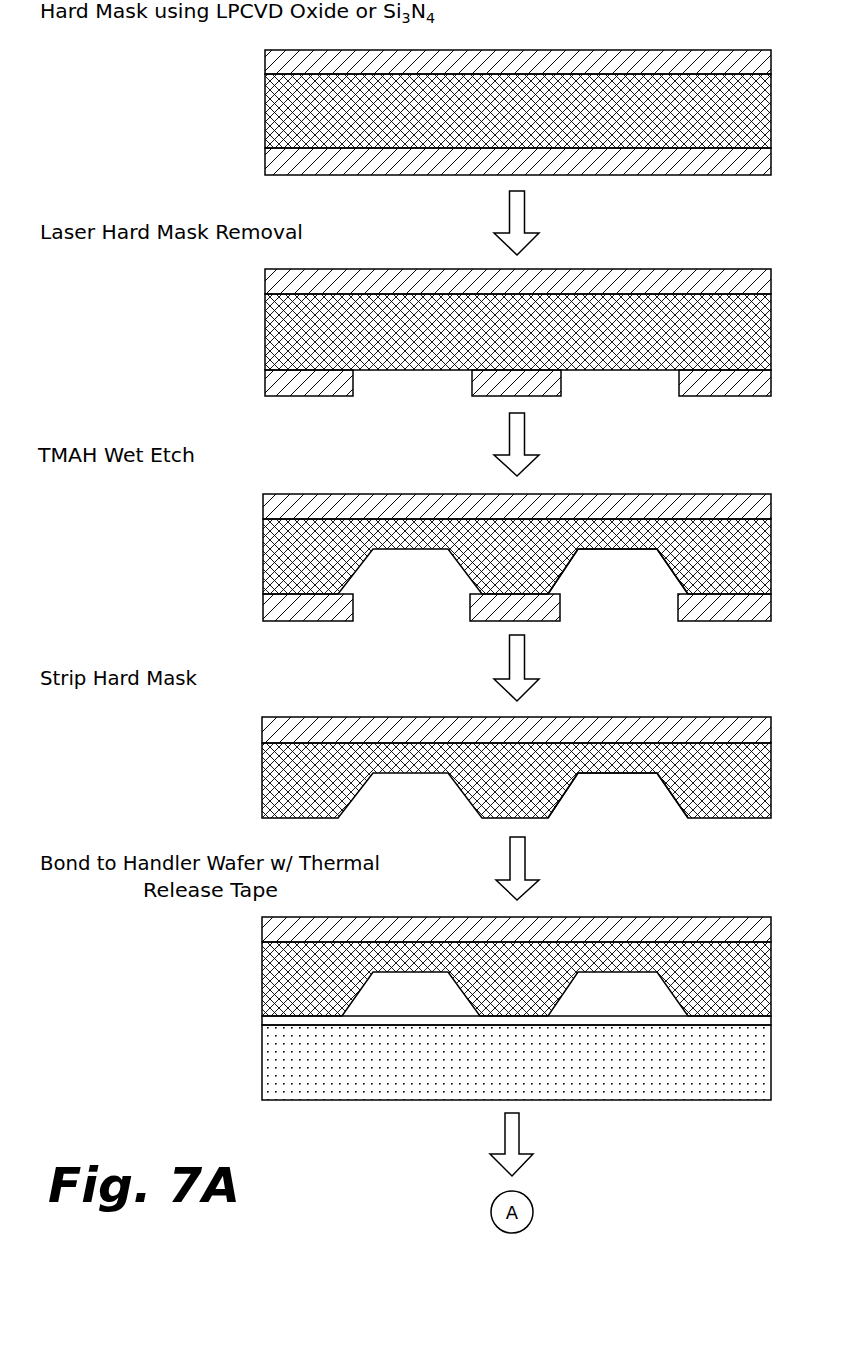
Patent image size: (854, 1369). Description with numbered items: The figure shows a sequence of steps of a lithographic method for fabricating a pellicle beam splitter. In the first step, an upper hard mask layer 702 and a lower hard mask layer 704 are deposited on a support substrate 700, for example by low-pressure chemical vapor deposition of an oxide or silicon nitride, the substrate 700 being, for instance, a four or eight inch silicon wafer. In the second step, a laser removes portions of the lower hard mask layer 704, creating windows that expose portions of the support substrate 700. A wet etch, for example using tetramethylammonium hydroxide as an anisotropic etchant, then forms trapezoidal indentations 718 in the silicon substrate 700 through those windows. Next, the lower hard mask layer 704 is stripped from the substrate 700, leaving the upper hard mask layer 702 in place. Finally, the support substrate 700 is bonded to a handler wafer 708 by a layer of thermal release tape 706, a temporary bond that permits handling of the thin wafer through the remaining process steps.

The support substrate 700 is at (265, 114).
The hard mask layer 702 is at (265, 64).
The lower hard mask layer 704 is at (265, 162).
The thermal release tape 706 is at (262, 1021).
The handler wafer 708 is at (262, 1060).
The indentations 718 is at (648, 596).